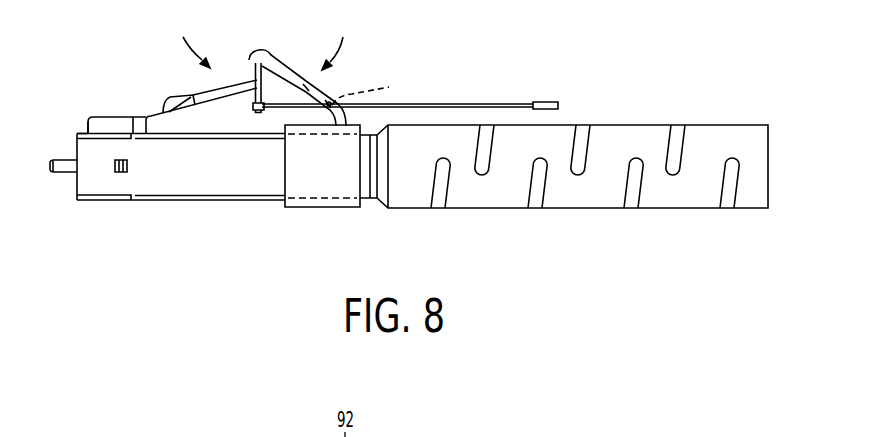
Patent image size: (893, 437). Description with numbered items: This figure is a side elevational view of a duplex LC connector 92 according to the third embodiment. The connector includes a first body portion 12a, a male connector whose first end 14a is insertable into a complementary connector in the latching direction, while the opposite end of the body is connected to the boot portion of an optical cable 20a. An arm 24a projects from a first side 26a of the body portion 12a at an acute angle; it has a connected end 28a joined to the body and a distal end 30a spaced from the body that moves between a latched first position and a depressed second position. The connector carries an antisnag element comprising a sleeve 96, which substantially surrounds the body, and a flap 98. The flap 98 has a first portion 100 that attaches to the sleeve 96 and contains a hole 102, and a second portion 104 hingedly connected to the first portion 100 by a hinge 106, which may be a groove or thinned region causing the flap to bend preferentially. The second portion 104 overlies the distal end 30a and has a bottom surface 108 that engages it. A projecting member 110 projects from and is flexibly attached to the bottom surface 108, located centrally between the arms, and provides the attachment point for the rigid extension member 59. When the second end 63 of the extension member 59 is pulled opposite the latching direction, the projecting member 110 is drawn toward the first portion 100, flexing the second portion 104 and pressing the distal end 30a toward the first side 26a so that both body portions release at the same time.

The first body portion 12a is at (90, 153).
The first end 14a is at (75, 183).
The optical cable 20a is at (578, 198).
The arm 24a is at (202, 97).
The first side 26a is at (85, 133).
The connected end 28a is at (113, 125).
The distal end 30a is at (240, 85).
The extension member 59 is at (457, 103).
The second end 63 is at (547, 102).
The duplex LC connector 92 is at (191, 40).
The sleeve 96 is at (323, 208).
The flap 98 is at (337, 42).
The first portion 100 is at (328, 97).
The hole 102 is at (366, 83).
The second portion 104 is at (282, 72).
The hinge 106 is at (307, 85).
The bottom surface 108 is at (255, 64).
The projecting member 110 is at (253, 95).